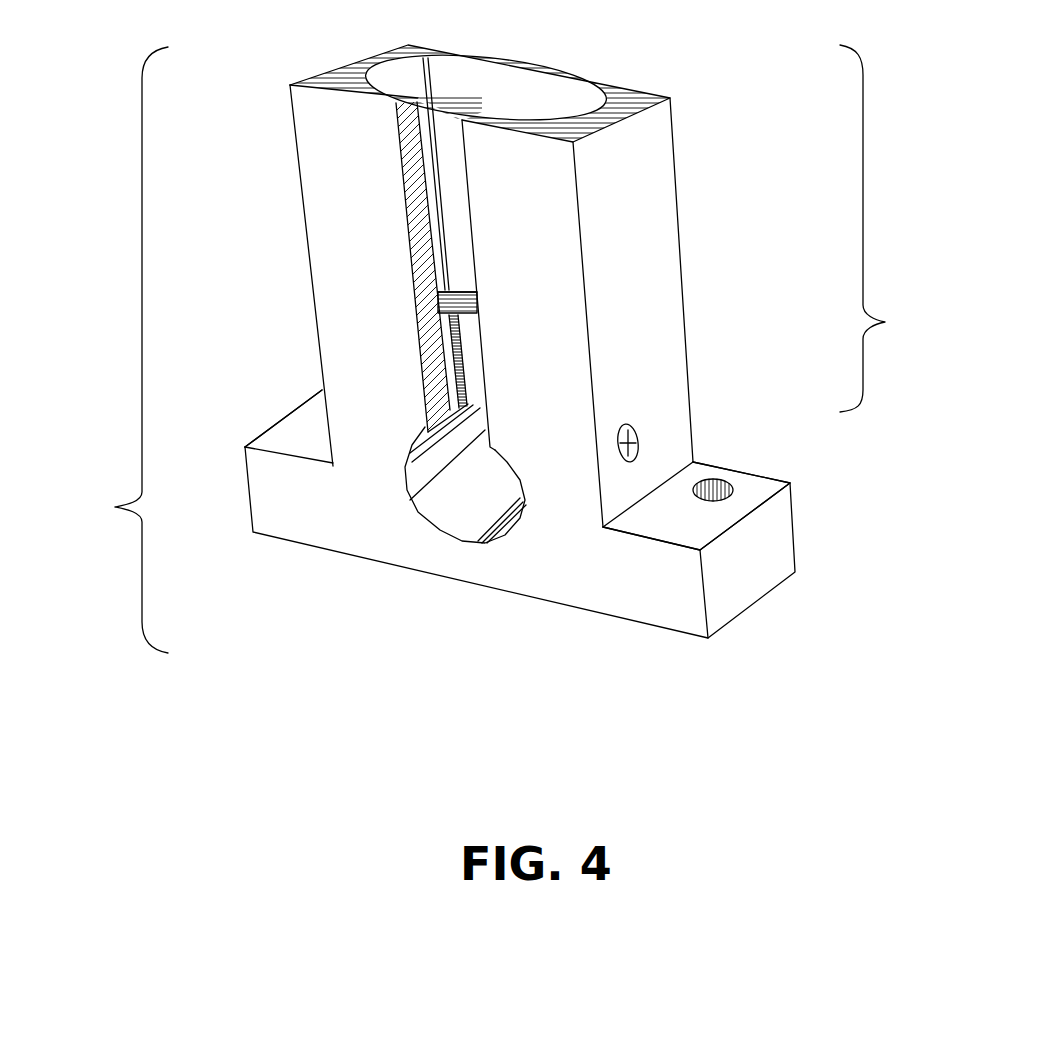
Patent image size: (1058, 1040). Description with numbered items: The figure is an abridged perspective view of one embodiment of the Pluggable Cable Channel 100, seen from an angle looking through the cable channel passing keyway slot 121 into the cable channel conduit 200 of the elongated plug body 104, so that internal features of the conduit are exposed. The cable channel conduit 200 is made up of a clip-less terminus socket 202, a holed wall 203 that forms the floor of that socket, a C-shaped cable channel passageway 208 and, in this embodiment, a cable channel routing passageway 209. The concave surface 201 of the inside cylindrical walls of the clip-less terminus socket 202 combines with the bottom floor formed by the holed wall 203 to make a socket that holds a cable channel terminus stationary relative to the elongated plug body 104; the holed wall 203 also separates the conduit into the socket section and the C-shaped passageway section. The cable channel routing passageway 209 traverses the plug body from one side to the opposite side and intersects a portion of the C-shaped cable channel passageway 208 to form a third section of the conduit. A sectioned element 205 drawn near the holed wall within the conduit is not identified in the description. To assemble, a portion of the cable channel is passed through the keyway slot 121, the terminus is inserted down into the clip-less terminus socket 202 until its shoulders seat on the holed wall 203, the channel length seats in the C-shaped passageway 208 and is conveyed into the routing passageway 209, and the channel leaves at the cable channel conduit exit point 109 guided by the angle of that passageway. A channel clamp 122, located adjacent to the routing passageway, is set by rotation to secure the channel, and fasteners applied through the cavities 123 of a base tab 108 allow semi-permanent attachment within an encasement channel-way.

The mounting bracket assembly 100 is at (104, 350).
The elongated plug body 104 is at (312, 290).
The base tab 108 is at (287, 413).
The cable channel conduit exit point 109 is at (420, 513).
The cable channel passing keyway slot 121 is at (400, 212).
The channel clamp 122 is at (628, 463).
The cavities 123 is at (707, 503).
The cable channel conduit 200 is at (902, 228).
The concave surface 201 is at (387, 76).
The clip-less terminus socket 202 is at (462, 98).
The holed wall 203 is at (455, 288).
The collar 205 is at (465, 317).
The C-shaped cable channel passageway 208 is at (468, 365).
The cable channel routing passageway 209 is at (472, 482).